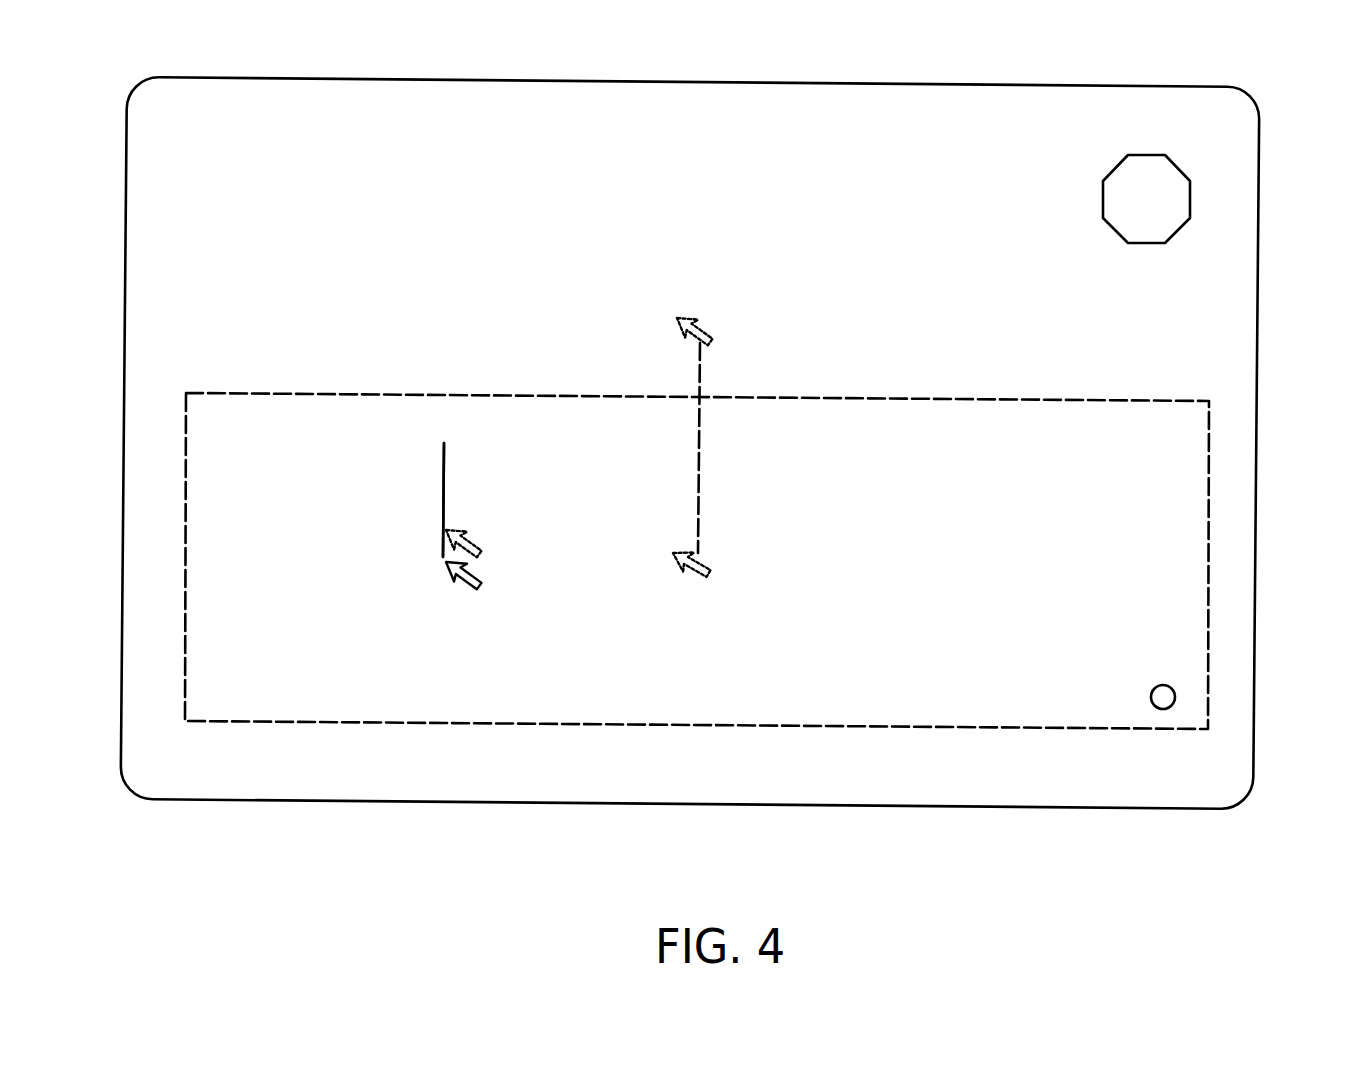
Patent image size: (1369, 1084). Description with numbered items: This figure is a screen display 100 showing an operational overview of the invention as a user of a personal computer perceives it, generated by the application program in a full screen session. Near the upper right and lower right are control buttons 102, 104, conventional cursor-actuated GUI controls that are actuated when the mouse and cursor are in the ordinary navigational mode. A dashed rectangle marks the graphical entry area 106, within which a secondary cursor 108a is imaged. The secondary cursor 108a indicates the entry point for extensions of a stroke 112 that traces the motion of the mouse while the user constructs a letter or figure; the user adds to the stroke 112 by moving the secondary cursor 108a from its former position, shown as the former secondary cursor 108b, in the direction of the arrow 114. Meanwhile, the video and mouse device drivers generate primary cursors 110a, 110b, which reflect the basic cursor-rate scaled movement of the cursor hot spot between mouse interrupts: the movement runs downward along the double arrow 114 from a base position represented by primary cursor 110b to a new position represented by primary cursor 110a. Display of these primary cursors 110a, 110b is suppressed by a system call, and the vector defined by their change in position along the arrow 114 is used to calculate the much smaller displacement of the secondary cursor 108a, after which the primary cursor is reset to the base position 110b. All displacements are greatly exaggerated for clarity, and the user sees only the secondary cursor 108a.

The screen display 100 is at (1298, 354).
The control button 102 is at (1113, 233).
The control button 104 is at (1151, 686).
The graphical entry area 106 is at (1070, 398).
The secondary cursor 108a is at (468, 587).
The former secondary cursor 108b is at (470, 530).
The primary cursor 110a is at (710, 573).
The primary cursor 110b is at (720, 338).
The stroke 112 is at (443, 495).
The arrow 114 is at (698, 502).